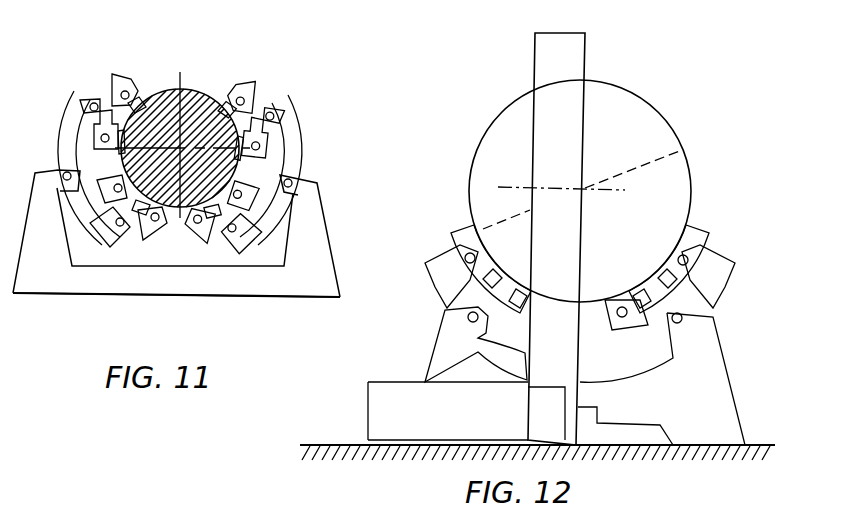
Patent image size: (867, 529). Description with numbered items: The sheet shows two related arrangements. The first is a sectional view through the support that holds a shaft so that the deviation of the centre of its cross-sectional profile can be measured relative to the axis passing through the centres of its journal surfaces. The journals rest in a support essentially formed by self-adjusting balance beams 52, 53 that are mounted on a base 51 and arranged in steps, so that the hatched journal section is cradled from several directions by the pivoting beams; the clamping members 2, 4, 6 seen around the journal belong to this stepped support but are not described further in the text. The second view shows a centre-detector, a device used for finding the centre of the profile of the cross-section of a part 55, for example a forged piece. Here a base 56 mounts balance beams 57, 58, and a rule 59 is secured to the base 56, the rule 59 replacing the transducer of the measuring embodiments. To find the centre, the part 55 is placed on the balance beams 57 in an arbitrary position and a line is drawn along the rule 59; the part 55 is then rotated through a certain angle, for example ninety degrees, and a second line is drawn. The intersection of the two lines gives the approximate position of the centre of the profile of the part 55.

In FIG. 11, the workpiece / shaft 2 is at (163, 88).
In FIG. 11, the clamping shoe 4 is at (182, 215).
In FIG. 11, the link 6 is at (190, 224).
In FIG. 11, the base 51 is at (318, 223).
In FIG. 11, the balance beam 52 is at (295, 142).
In FIG. 11, the balance beam 53 is at (247, 90).
In FIG. 12, the part 55 is at (633, 112).
In FIG. 12, the base 56 is at (715, 387).
In FIG. 12, the balance beam 57 is at (705, 270).
In FIG. 12, the balance beam 58 is at (695, 240).
In FIG. 12, the rule 59 is at (573, 63).